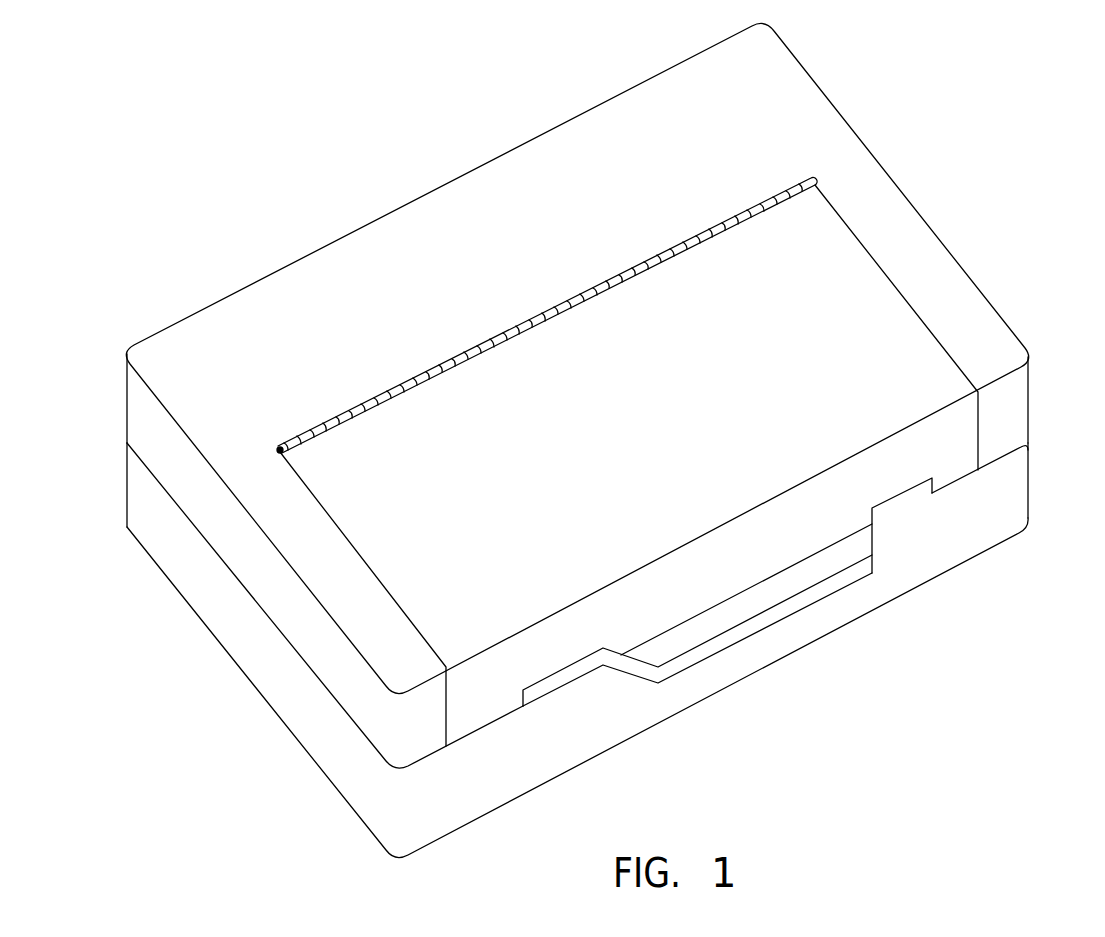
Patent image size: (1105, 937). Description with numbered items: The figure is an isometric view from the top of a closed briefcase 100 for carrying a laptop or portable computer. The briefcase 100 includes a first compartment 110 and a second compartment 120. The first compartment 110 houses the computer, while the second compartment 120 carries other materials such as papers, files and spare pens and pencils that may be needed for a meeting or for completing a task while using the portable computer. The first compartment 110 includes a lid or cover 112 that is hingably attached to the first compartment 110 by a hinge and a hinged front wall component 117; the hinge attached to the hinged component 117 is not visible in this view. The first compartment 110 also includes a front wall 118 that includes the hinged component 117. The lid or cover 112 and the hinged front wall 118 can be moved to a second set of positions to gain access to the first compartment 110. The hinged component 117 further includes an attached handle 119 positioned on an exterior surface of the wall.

The briefcase 100 is at (117, 343).
The first compartment 110 is at (233, 551).
The lid or cover 112 is at (583, 286).
The hinged front wall component 117 is at (950, 463).
The front wall 118 is at (1010, 413).
The handle 119 is at (773, 617).
The second compartment 120 is at (267, 673).